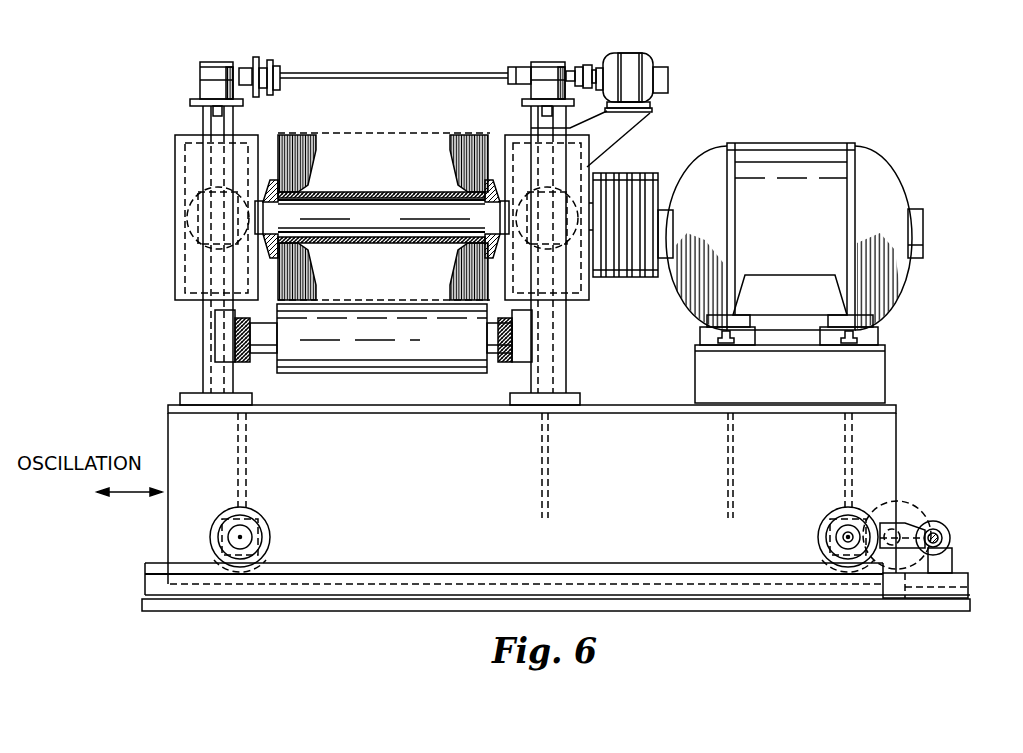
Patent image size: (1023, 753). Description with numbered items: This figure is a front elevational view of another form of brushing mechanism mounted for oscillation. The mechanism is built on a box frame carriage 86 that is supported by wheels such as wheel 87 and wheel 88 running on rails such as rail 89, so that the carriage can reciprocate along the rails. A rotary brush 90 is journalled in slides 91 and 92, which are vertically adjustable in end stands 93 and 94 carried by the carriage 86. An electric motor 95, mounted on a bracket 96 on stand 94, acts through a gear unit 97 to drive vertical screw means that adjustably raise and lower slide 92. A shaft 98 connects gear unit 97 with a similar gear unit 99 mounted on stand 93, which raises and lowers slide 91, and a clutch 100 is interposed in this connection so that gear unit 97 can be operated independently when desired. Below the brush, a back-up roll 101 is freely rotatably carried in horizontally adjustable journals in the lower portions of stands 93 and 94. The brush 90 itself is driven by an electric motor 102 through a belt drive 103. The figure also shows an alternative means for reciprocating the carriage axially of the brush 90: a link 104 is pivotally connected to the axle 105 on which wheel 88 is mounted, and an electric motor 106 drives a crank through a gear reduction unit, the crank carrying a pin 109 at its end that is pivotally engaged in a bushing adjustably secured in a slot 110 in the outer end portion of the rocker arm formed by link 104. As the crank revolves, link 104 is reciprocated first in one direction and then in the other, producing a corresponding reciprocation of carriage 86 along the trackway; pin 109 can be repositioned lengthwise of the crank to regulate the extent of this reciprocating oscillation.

The box frame carriage 86 is at (890, 453).
The wheel 87 is at (272, 532).
The wheel 88 is at (822, 524).
The rail 89 is at (412, 562).
The rotary brush 90 is at (382, 193).
The slide 91 is at (175, 172).
The slide 92 is at (589, 298).
The end stand 93 is at (198, 116).
The end stand 94 is at (567, 357).
The electric motor 95 is at (631, 52).
The bracket 96 is at (636, 122).
The gear unit 97 is at (545, 60).
The shaft 98 is at (332, 72).
The gear unit 99 is at (213, 58).
The clutch 100 is at (260, 55).
The back-up roll 101 is at (426, 370).
The electric motor 102 is at (782, 146).
The belt drive 103 is at (641, 172).
The link 104 is at (907, 522).
The axle 105 is at (843, 538).
The electric motor 106 is at (954, 543).
The pin 109 is at (940, 529).
The slot 110 is at (917, 599).